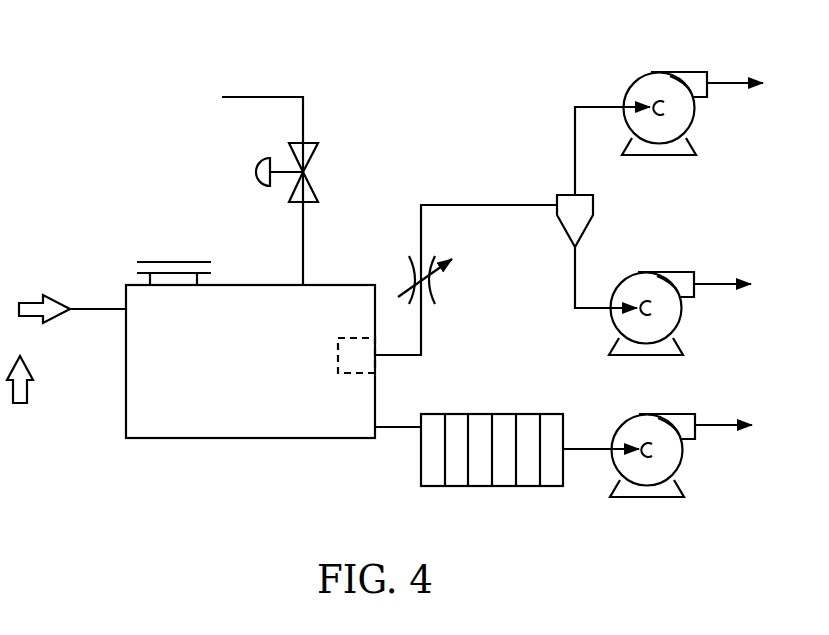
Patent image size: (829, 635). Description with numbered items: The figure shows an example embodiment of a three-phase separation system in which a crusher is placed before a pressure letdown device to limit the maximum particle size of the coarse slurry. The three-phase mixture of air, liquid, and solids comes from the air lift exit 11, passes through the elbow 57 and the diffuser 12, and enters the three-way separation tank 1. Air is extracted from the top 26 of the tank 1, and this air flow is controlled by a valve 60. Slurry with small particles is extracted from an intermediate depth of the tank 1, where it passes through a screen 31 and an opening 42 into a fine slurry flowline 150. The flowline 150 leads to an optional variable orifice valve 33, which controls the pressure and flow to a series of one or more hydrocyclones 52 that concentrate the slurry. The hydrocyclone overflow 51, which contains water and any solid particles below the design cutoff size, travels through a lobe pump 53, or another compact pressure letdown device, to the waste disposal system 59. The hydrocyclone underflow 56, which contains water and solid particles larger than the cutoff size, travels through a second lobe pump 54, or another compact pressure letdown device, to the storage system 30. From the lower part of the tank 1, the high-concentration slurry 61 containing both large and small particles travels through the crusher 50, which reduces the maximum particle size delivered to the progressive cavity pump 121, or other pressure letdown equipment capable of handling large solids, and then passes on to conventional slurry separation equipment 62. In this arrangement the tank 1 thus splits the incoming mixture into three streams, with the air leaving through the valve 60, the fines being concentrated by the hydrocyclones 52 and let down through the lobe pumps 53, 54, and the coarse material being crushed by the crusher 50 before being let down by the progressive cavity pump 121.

The three-way separation tank 1 is at (248, 439).
The air lift exit 11 is at (27, 390).
The diffuser 12 is at (97, 306).
The top of tank 26 is at (303, 244).
The storage system 30 is at (725, 288).
The screen 31 is at (338, 355).
The variable orifice valve 33 is at (433, 292).
The opening 42 is at (390, 373).
The crusher 50 is at (505, 487).
The hydrocyclone overflow 51 is at (573, 150).
The hydrocyclone 52 is at (593, 205).
The lobe pump 53 is at (658, 72).
The lobe pump 54 is at (648, 272).
The hydrocyclone underflow 56 is at (575, 275).
The elbow 57 is at (40, 300).
The waste disposal system 59 is at (733, 82).
The valve 60 is at (256, 172).
The high-concentration slurry 61 is at (398, 428).
The conventional slurry separation equipment 62 is at (718, 430).
The progressive cavity pump 121 is at (645, 500).
The fine slurry flowline 150 is at (422, 330).